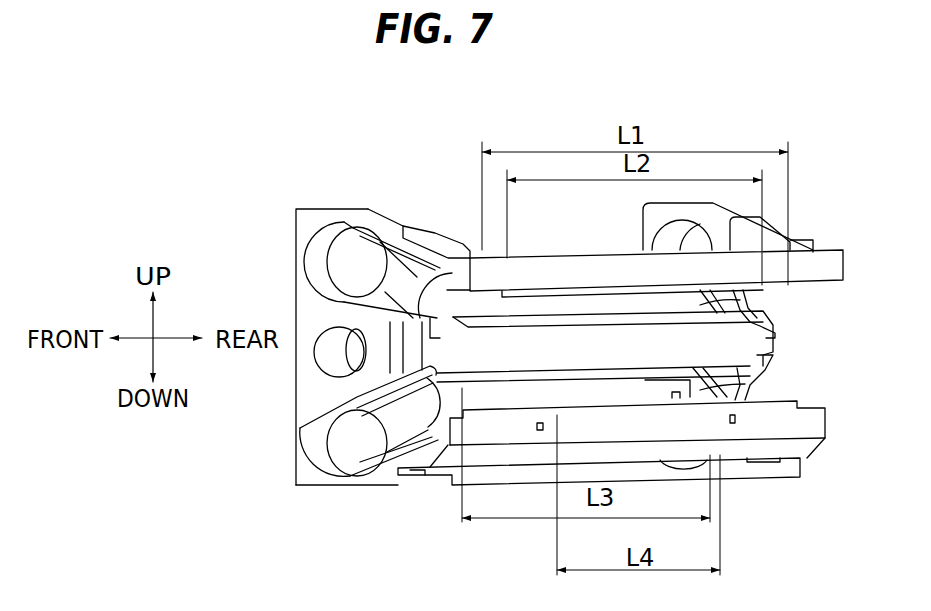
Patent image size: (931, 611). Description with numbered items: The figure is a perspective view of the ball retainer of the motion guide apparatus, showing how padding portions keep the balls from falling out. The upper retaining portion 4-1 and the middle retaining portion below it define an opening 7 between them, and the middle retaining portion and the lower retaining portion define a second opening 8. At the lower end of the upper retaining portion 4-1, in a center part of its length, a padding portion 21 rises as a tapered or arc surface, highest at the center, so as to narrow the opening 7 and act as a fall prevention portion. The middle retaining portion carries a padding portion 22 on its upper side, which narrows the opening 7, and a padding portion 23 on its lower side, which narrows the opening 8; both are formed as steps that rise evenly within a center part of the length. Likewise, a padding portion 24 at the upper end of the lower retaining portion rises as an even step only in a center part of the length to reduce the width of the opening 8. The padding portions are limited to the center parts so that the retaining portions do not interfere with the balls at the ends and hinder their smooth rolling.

The upper retaining portion 4-1 is at (575, 270).
The opening 7 is at (558, 308).
The opening 8 is at (540, 390).
The padding portion 21 is at (623, 287).
The padding portion 22 is at (712, 306).
The padding portion 23 is at (713, 390).
The padding portion 24 is at (675, 402).